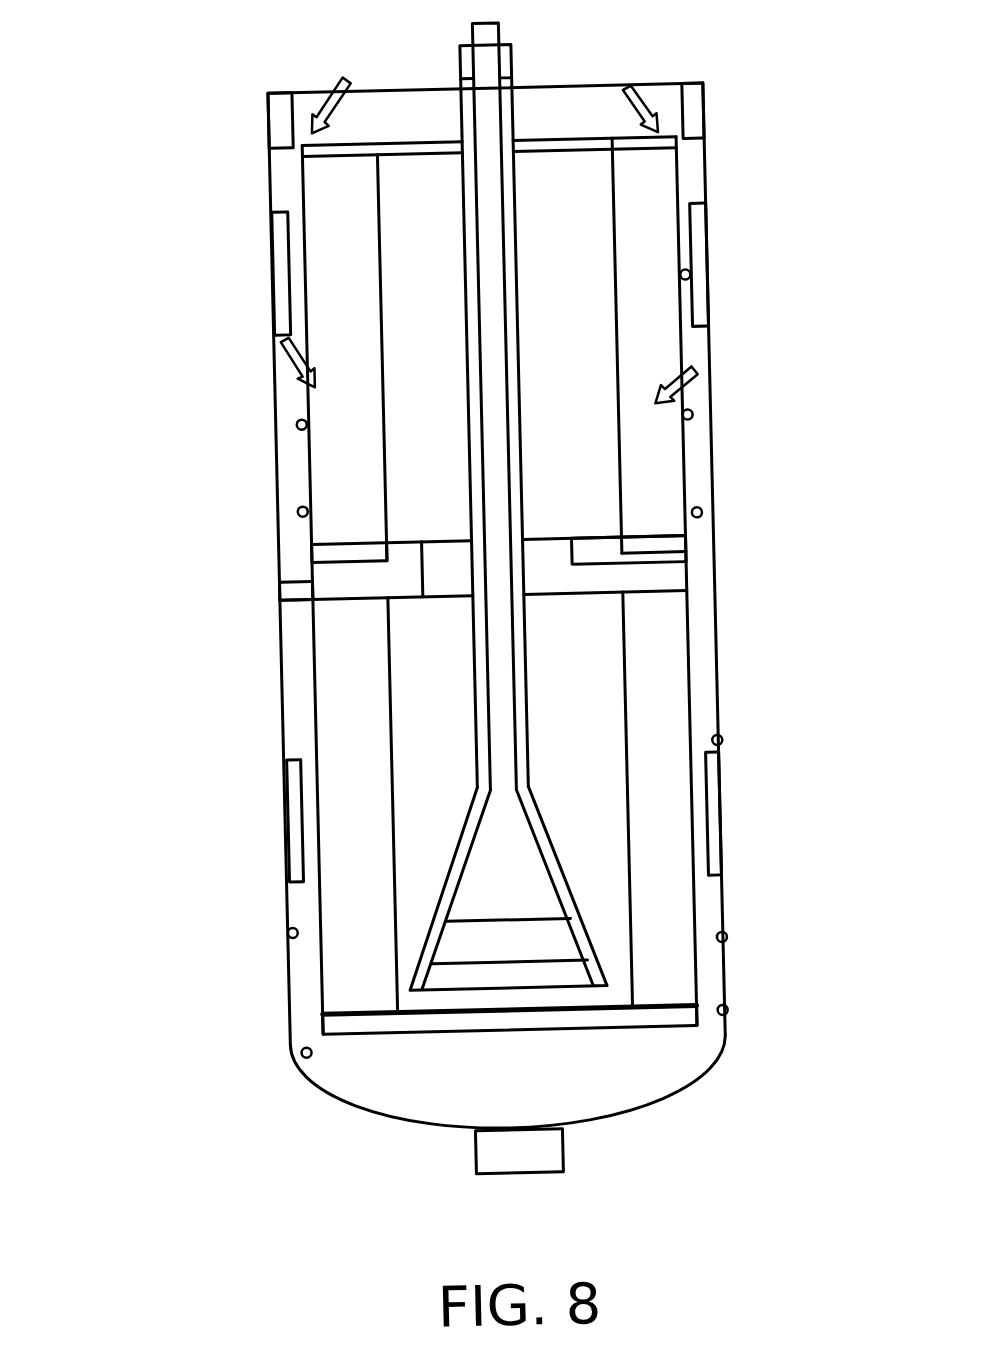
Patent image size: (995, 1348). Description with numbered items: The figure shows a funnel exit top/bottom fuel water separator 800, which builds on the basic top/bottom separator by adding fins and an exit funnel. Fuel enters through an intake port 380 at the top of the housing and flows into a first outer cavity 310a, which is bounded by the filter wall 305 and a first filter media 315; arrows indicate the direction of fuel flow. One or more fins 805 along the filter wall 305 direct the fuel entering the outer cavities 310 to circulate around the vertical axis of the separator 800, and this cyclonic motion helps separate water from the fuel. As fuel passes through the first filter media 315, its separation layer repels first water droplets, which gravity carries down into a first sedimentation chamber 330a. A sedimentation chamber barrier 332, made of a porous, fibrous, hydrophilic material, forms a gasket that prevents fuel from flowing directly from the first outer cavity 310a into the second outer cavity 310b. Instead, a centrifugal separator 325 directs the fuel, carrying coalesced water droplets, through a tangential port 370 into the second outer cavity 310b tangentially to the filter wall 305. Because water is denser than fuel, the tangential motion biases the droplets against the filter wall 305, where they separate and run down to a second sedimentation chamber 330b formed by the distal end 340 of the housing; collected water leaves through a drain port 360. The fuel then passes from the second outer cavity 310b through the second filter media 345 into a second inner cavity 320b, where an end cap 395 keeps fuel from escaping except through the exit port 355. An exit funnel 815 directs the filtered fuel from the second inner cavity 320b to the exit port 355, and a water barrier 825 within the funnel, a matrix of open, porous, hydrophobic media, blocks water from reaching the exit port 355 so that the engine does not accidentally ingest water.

The funnel exit top/bottom FWS 800 is at (130, 66).
The filter wall 305 is at (246, 570).
The outer cavities 310 is at (746, 558).
The first outer cavity 310a is at (251, 374).
The second outer cavity 310b is at (260, 818).
The first filter media 315 is at (498, 350).
The second inner cavity 320b is at (621, 800).
The centrifugal separator 325 is at (688, 475).
The first sedimentation chamber 330a is at (537, 521).
The second sedimentation chamber 330b is at (512, 1087).
The sedimentation chamber barrier 332 is at (510, 590).
The distal end 340 is at (475, 1092).
The second filter media 345 is at (746, 579).
The exit port 355 is at (645, 402).
The drain port 360 is at (560, 1179).
The tangential port 370 is at (608, 603).
The intake port 380 is at (346, 84).
The end cap 395 is at (552, 662).
The fins 805 is at (501, 543).
The exit funnel 815 is at (540, 1100).
The water barrier 825 is at (486, 937).